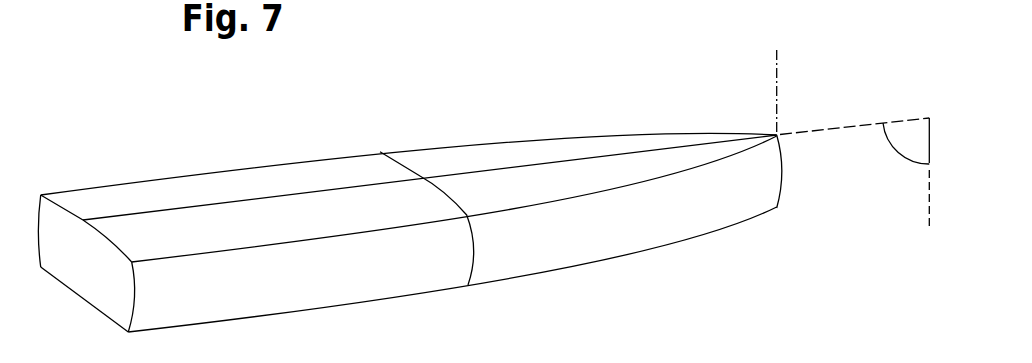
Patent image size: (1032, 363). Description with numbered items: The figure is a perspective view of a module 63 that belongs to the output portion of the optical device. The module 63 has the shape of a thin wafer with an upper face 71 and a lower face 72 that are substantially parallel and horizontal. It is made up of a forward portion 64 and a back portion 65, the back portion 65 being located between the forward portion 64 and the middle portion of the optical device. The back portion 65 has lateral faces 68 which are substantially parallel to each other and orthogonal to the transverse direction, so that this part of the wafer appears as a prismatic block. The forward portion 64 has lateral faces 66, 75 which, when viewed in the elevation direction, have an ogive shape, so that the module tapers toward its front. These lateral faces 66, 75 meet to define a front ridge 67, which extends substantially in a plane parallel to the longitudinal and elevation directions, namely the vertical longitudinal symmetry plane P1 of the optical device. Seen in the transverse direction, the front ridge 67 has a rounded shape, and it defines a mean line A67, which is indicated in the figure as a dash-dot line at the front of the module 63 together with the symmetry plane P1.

The module 63 is at (451, 205).
The forward portion 64 is at (500, 205).
The back portion 65 is at (201, 148).
The lateral faces 66 is at (454, 217).
The front surface 75 is at (633, 225).
The front ridge 67 is at (782, 167).
The lateral faces 68 is at (348, 277).
The upper face 71 is at (472, 155).
The lower face 72 is at (533, 245).
The mean line A67 is at (777, 65).
The symmetry plane P1 is at (854, 174).